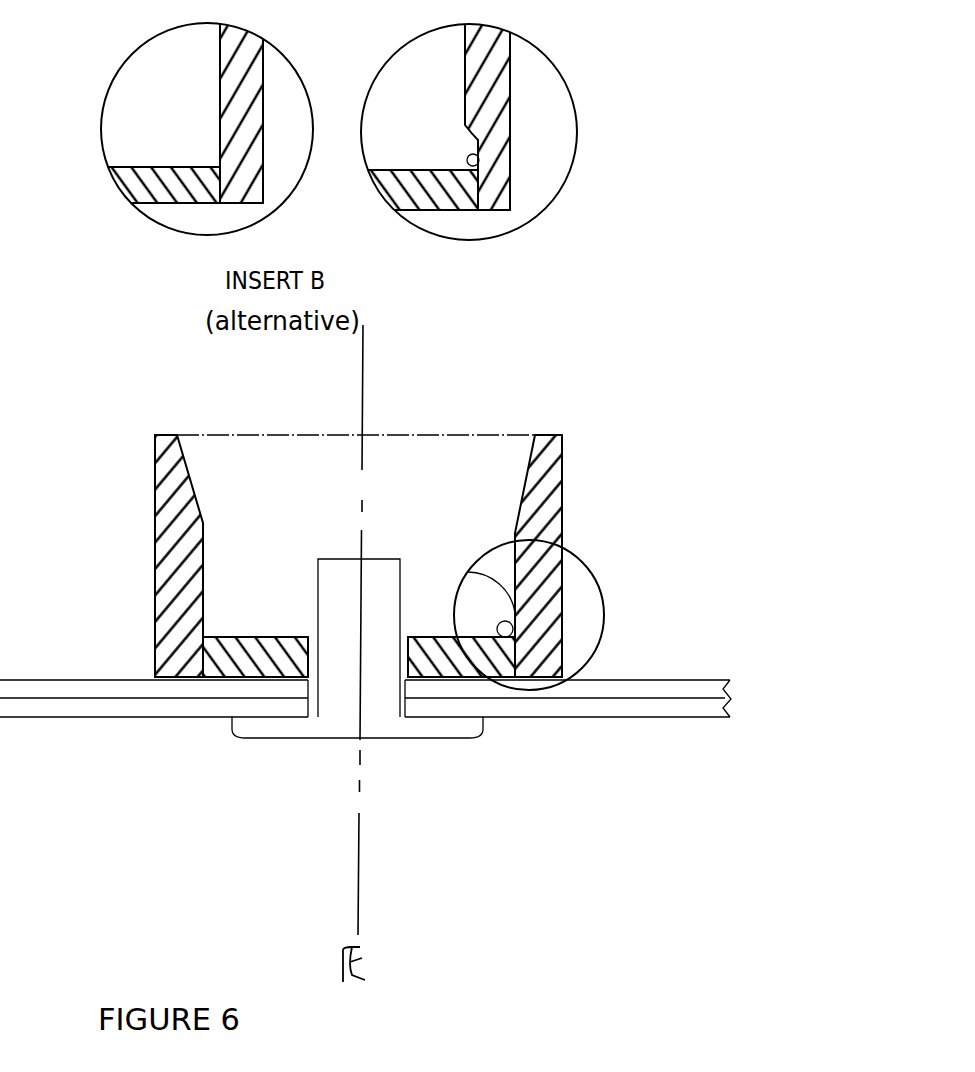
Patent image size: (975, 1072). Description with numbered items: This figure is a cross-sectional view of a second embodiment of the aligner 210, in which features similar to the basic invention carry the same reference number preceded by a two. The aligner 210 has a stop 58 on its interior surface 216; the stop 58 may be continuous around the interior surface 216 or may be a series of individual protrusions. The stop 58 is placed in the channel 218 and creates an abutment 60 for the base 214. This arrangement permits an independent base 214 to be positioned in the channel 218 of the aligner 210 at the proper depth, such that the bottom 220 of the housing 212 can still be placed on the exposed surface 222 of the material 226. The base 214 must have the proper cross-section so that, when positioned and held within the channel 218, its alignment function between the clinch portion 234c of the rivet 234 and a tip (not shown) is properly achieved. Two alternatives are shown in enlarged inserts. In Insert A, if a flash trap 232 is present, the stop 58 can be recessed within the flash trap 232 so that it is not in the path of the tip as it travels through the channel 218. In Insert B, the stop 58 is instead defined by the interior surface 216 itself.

The housing 212 is at (165, 522).
The base 214 is at (298, 640).
The interior surface 216 is at (206, 542).
The channel 218 is at (444, 455).
The stop 58 is at (205, 616).
The flash trap 232 is at (466, 135).
The clinch portion 234c is at (382, 572).
The rivet 234 is at (414, 756).
The aligner 210 is at (590, 533).
The abutment 60 is at (620, 580).
The exposed surface 222 is at (640, 683).
The material 226 is at (683, 692).
The bottom 220 is at (543, 677).